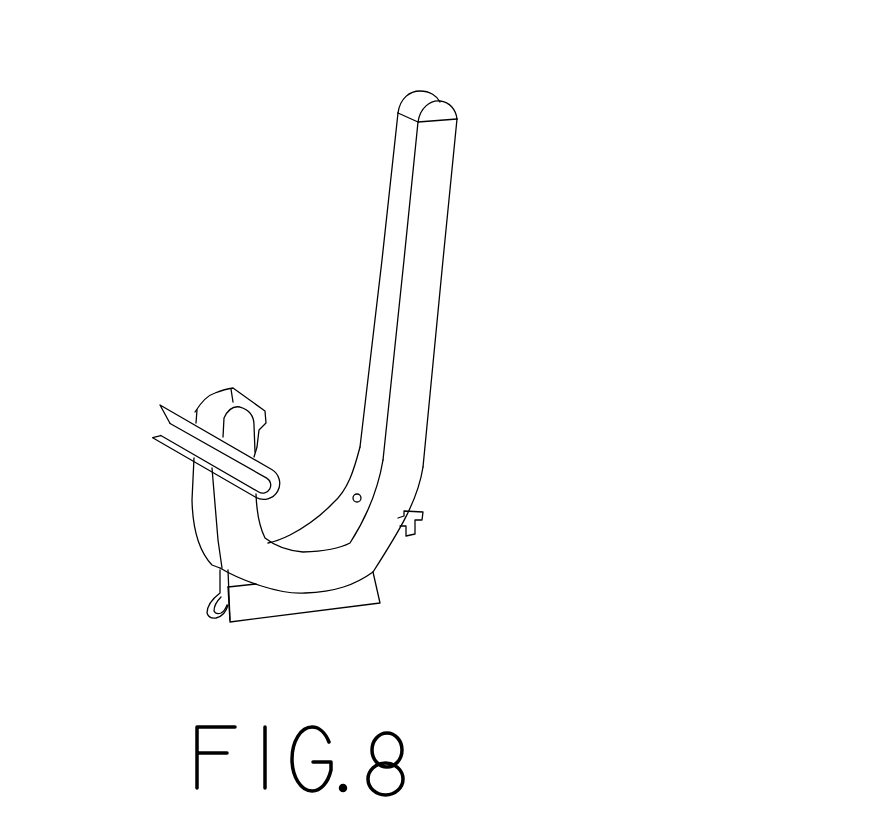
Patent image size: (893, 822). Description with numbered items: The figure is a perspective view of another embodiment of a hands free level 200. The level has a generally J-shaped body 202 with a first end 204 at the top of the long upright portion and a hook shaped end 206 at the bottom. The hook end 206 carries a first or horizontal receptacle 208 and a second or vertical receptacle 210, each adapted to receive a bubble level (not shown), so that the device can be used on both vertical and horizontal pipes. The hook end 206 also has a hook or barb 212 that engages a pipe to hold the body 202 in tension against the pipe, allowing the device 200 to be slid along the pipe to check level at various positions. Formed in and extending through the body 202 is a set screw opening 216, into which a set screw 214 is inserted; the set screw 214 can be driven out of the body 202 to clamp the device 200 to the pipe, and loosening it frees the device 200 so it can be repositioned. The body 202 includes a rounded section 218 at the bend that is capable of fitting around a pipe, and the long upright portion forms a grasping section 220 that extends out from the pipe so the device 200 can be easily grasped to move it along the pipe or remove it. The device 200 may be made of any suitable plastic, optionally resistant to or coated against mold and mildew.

The hands free level 200 is at (240, 158).
The J-shaped body 202 is at (442, 388).
The first end 204 is at (430, 96).
The hook shaped end 206 is at (232, 388).
The horizontal receptacle 208 is at (300, 615).
The vertical receptacle 210 is at (187, 443).
The barb 212 is at (265, 422).
The set screw 214 is at (423, 522).
The set screw opening 216 is at (353, 495).
The rounded section 218 is at (320, 532).
The grasping section 220 is at (427, 220).